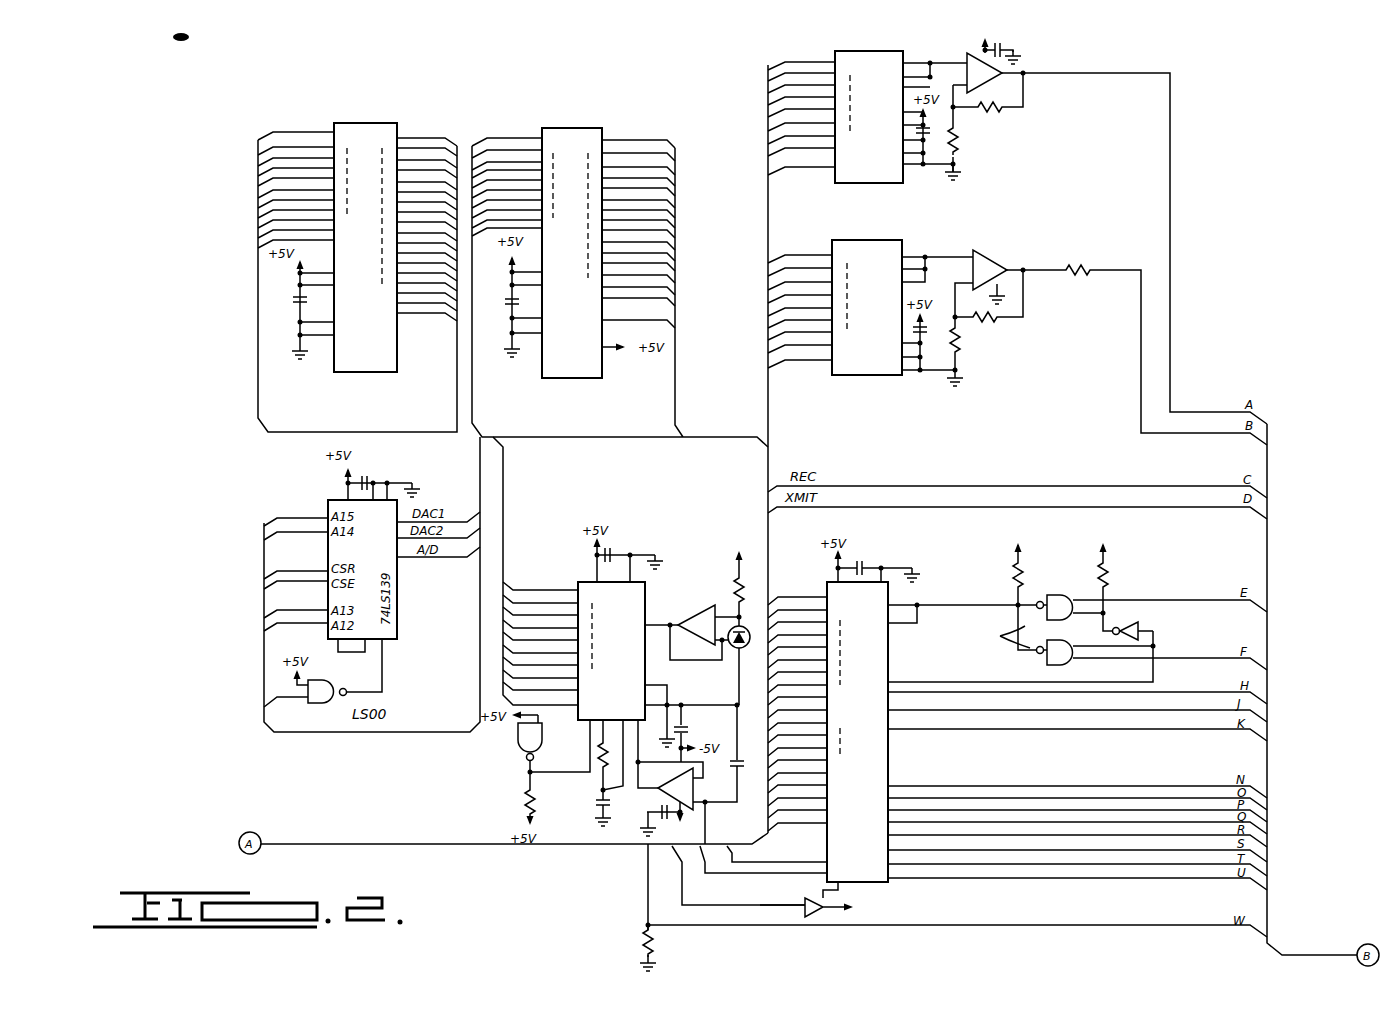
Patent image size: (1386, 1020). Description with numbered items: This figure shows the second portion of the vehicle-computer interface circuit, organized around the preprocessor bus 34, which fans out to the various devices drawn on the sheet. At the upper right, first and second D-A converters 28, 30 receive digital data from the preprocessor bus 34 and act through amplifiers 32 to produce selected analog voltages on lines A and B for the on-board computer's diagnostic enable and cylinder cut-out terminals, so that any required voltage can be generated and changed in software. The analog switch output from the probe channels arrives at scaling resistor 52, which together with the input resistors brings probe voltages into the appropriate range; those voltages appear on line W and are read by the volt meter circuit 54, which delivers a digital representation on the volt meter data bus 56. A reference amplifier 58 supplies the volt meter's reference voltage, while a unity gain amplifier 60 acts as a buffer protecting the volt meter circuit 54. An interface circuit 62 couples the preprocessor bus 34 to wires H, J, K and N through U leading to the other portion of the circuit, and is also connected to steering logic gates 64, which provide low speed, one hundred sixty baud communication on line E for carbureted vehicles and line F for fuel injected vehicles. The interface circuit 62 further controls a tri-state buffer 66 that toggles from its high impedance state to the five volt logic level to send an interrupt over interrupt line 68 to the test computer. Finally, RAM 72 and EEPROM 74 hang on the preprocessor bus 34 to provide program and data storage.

The first D-A converter 28 is at (882, 63).
The second D-A converter 30 is at (881, 252).
The amplifiers 32 is at (1023, 87).
The preprocessor bus 34 is at (769, 405).
The scaling resistor 52 is at (641, 932).
The volt meter circuit 54 is at (660, 606).
The volt meter data bus 56 is at (528, 578).
The reference amplifier 58 is at (695, 617).
The unity gain amplifier 60 is at (697, 789).
The interface circuit 62 is at (882, 750).
The steering logic gates 64 is at (1056, 585).
The tri-state buffer 66 is at (815, 918).
The interrupt line 68 is at (727, 893).
The RAM 72 is at (370, 125).
The EEPROM 74 is at (573, 128).